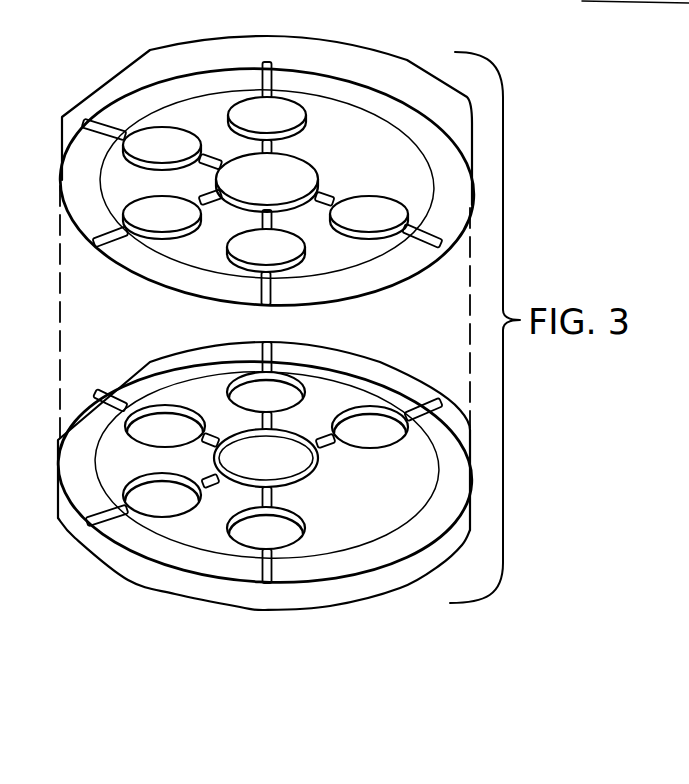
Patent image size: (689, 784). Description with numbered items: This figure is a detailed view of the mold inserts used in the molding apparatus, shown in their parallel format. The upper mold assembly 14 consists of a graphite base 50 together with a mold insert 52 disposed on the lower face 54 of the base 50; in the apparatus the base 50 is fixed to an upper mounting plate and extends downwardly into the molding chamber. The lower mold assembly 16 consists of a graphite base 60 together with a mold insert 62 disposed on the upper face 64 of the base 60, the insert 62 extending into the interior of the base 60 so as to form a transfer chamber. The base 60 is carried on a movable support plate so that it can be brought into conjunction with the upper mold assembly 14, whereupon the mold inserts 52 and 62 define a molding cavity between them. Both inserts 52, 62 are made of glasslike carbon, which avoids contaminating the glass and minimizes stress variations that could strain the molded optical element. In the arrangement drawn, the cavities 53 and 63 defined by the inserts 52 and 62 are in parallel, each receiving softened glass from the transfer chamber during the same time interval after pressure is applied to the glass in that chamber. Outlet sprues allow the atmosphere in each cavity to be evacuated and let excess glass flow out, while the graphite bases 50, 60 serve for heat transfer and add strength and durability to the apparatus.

The upper mold assembly 14 is at (122, 58).
The lower mold assembly 16 is at (180, 607).
The graphite base 50 is at (247, 163).
The mold insert 52 is at (108, 171).
The cavities 53 is at (153, 222).
The lower face 54 is at (405, 260).
The graphite base 60 is at (246, 472).
The mold insert 62 is at (108, 451).
The cavities 63 is at (148, 420).
The upper face 64 is at (387, 378).